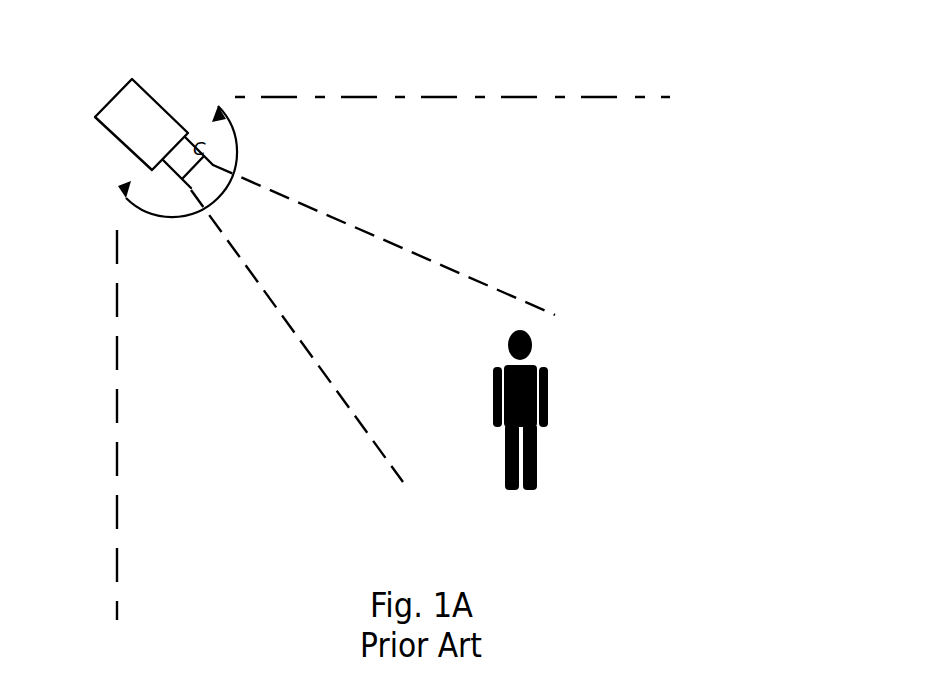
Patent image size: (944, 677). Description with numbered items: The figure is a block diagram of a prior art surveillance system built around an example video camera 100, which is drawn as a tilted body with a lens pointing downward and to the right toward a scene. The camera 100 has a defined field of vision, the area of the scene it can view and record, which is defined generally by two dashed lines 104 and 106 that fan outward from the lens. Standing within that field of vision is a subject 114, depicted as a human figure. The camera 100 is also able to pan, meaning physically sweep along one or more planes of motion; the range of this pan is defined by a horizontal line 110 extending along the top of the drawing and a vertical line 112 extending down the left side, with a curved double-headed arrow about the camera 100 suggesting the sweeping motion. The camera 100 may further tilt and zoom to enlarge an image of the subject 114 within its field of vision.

The video camera 100 is at (132, 79).
The line 104 is at (413, 253).
The line 106 is at (322, 373).
The line 110 is at (517, 97).
The line 112 is at (118, 478).
The subject 114 is at (552, 415).